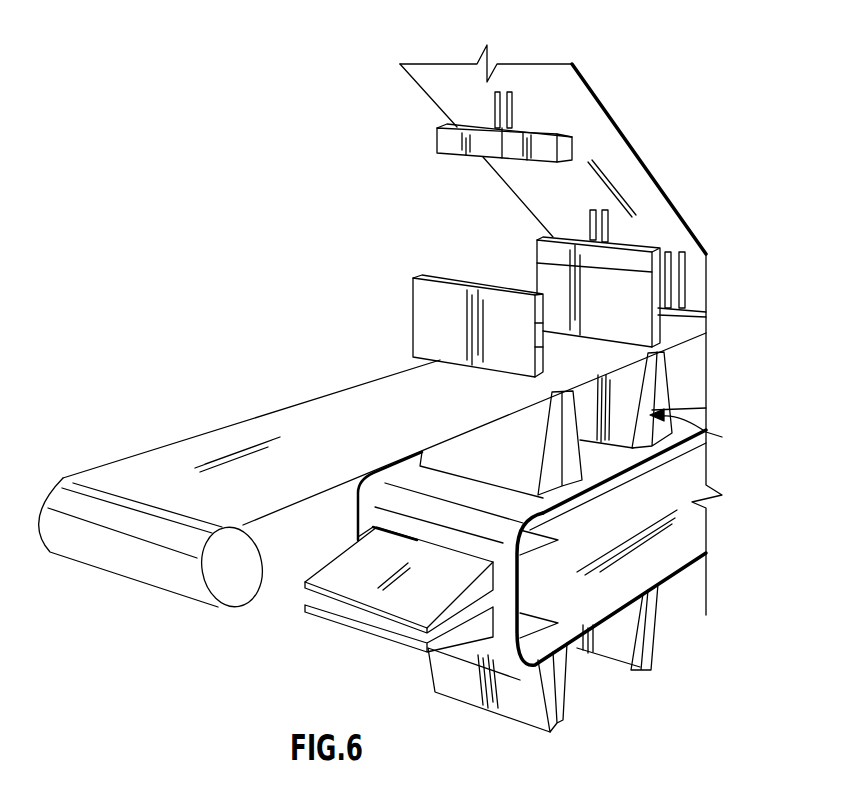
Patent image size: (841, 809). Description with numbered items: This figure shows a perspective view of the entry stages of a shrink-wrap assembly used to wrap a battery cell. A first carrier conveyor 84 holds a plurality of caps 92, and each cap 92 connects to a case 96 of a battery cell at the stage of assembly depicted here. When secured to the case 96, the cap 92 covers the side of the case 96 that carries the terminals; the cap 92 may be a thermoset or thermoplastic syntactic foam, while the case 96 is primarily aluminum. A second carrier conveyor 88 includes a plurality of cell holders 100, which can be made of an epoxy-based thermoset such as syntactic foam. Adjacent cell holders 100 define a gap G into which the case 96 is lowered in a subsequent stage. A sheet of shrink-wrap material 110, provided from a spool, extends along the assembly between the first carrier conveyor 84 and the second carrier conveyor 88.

The first carrier conveyor 84 is at (666, 192).
The cap 92 is at (560, 150).
The case 96 is at (638, 318).
The gap G is at (698, 431).
The sheet of shrink-wrap material 110 is at (143, 490).
The second carrier conveyor 88 is at (605, 628).
The cell holder 100 is at (548, 700).